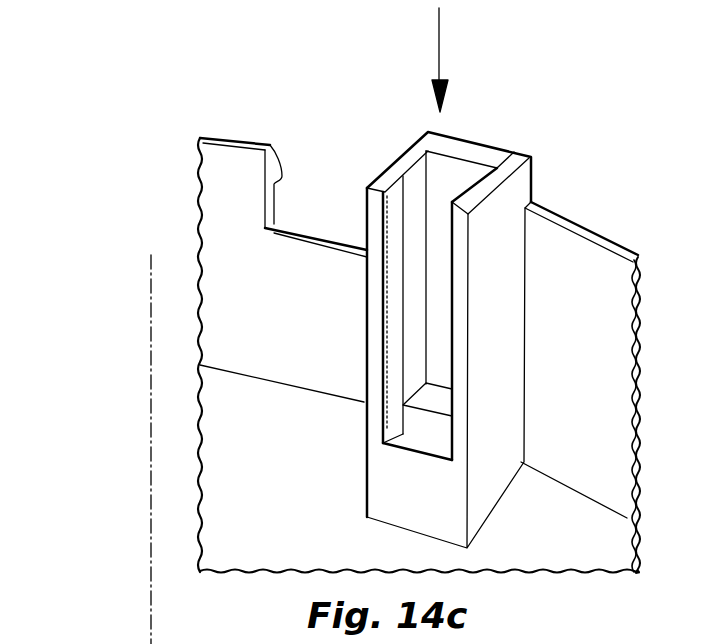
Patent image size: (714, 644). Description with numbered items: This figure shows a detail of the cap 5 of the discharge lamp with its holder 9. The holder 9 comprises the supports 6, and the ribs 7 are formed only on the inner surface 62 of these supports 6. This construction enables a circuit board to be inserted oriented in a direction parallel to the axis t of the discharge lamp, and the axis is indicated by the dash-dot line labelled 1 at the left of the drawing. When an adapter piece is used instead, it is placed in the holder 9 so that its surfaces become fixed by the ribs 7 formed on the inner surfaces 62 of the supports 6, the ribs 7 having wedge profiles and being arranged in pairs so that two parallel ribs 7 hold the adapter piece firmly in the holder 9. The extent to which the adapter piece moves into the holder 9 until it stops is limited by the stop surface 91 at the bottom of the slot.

The device axis 1 is at (150, 322).
The cap 5 is at (605, 236).
The support 6 is at (380, 182).
The inner surface 62 is at (418, 170).
The rib 7 is at (379, 178).
The holder 9 is at (461, 163).
The stop surface 91 is at (438, 403).